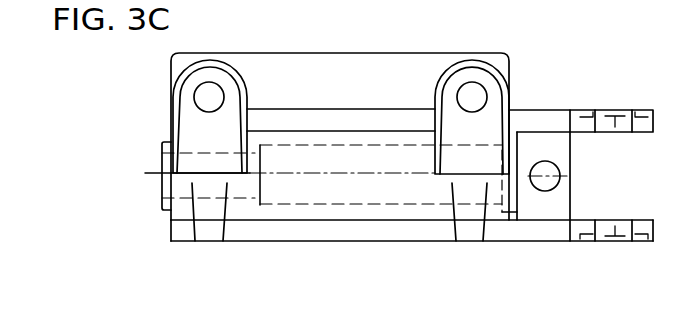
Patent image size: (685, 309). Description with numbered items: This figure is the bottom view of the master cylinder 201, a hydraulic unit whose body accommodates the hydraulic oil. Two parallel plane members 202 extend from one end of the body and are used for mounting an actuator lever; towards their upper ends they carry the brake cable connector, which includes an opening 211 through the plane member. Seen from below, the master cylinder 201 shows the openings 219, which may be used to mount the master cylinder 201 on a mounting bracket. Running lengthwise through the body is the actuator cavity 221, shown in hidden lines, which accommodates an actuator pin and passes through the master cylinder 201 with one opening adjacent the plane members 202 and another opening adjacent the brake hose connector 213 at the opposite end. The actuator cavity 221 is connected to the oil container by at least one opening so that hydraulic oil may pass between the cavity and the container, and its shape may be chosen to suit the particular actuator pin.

The master cylinder 201 is at (130, 228).
The plane members 202 is at (557, 118).
The opening 211 is at (547, 181).
The brake hose connector 213 is at (162, 163).
The openings 219 is at (464, 97).
The actuator cavity 221 is at (336, 205).